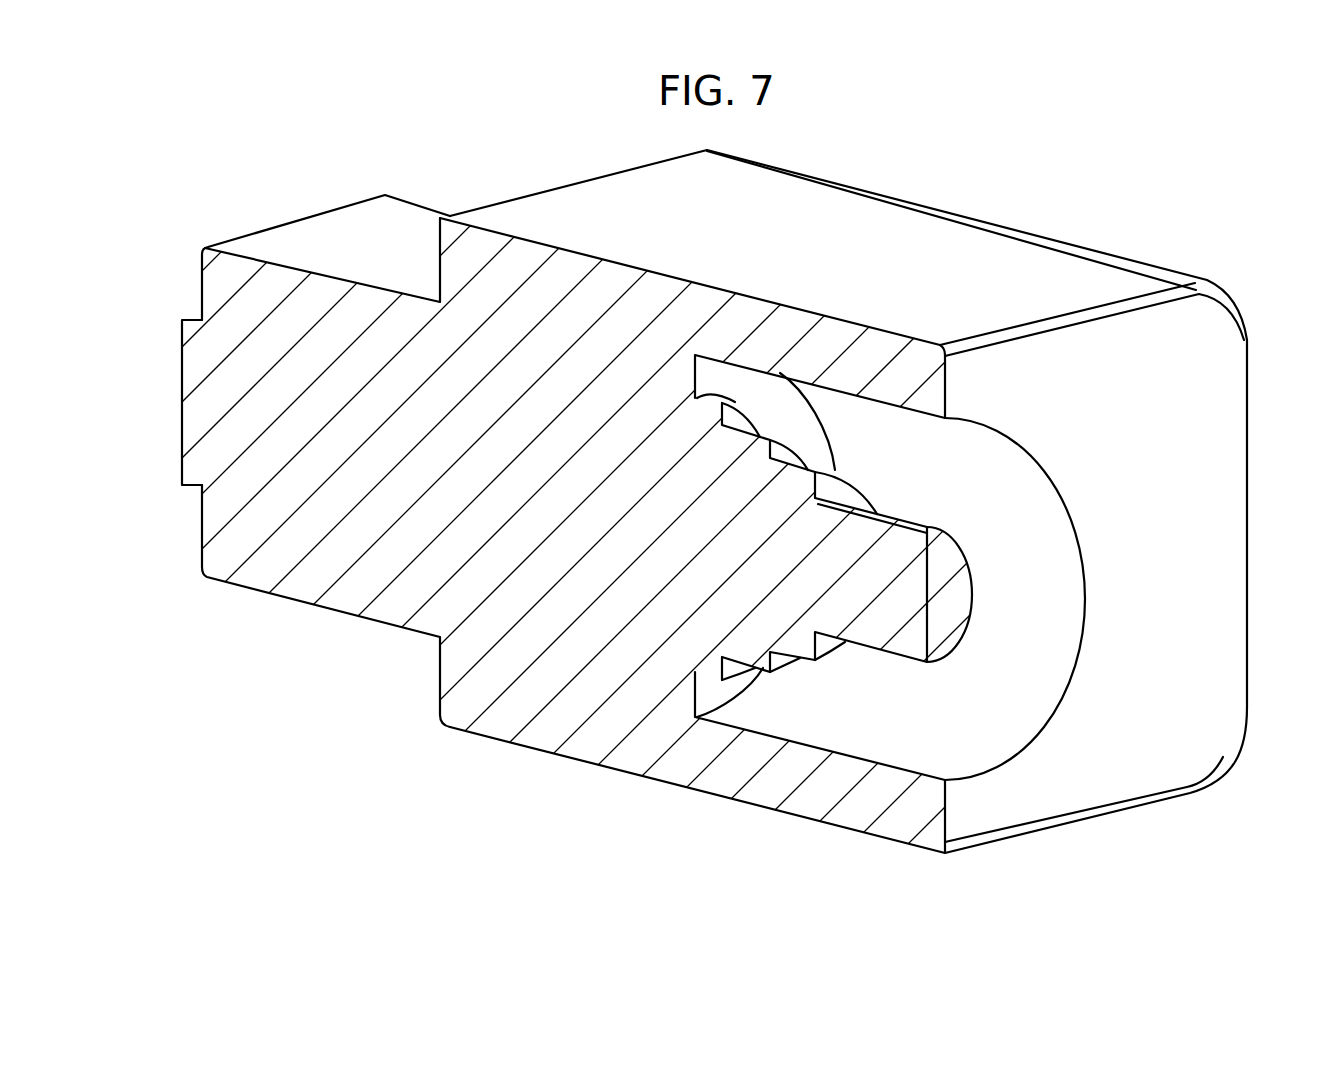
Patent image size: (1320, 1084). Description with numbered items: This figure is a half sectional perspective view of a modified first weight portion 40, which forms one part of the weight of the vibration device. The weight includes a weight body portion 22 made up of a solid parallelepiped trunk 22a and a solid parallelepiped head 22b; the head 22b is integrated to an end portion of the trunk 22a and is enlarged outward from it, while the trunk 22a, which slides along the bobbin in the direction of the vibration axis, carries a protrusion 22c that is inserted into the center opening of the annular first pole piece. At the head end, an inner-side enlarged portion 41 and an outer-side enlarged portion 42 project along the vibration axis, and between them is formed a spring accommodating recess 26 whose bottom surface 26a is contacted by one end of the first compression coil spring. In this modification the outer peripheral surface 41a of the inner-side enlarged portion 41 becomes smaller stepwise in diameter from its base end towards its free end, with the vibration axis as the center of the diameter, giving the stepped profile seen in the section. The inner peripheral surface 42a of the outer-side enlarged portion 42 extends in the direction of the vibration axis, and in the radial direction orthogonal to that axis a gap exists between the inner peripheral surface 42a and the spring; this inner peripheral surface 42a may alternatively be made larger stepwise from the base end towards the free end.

The weight body portion 22 is at (660, 500).
The trunk 22a is at (378, 582).
The head 22b is at (517, 693).
The protrusion 22c is at (190, 430).
The spring accommodating recess 26 is at (868, 713).
The bottom surface 26a is at (705, 694).
The first weight portion 40 is at (1006, 171).
The inner-side enlarged portion 41 is at (922, 517).
The outer peripheral surface 41a is at (850, 472).
The outer-side enlarged portion 42 is at (868, 362).
The inner peripheral surface 42a is at (822, 393).